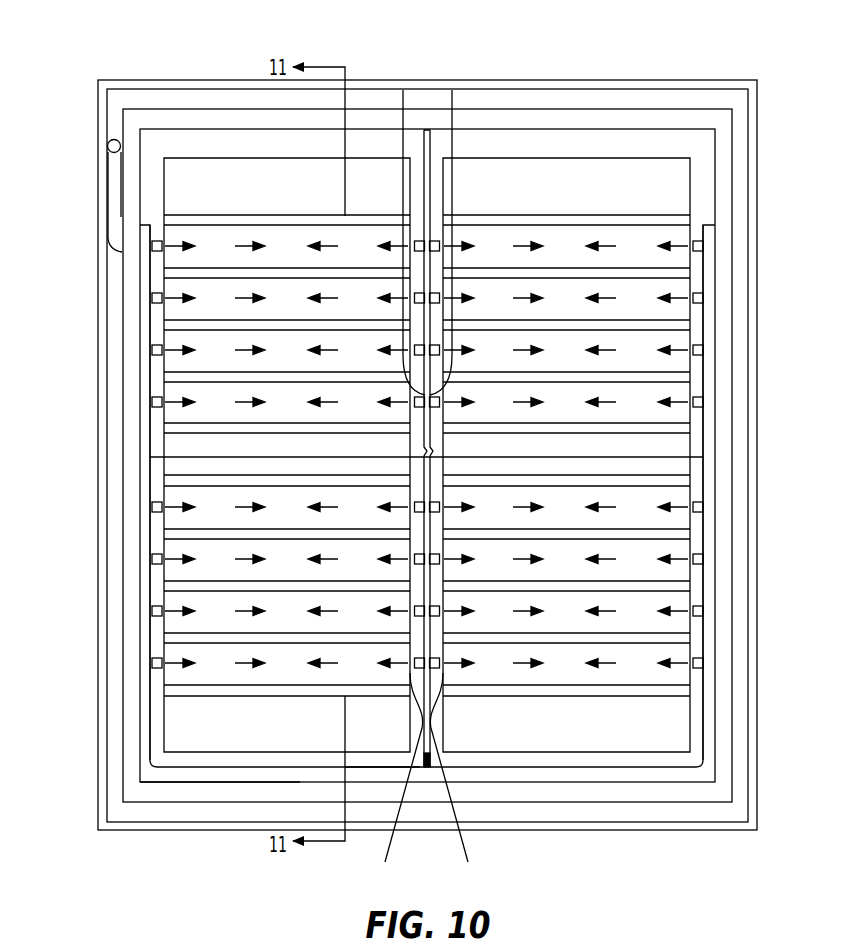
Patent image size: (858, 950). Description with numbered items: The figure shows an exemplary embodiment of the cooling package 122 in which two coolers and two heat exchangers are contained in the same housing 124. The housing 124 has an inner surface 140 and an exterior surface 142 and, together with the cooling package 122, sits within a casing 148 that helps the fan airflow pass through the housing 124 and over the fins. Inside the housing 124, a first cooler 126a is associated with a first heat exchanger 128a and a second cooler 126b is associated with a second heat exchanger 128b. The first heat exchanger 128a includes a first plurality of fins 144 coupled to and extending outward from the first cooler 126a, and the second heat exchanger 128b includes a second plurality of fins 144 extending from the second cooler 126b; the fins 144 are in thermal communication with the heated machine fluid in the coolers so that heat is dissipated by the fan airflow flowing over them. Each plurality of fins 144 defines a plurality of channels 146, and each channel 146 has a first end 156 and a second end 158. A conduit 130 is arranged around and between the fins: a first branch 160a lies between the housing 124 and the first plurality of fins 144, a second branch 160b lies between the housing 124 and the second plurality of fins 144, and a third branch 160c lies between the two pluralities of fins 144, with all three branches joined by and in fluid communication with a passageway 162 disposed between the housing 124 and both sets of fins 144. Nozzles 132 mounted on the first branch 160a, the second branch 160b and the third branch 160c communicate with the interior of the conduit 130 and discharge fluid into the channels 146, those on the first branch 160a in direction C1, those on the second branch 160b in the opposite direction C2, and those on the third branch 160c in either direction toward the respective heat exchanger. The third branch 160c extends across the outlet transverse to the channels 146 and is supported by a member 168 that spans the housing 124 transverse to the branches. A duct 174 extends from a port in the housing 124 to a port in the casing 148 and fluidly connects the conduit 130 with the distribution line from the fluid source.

The cooling package 122 is at (603, 102).
The housing 124 is at (135, 302).
The first cooler 126a is at (207, 185).
The second cooler 126b is at (621, 185).
The first heat exchanger 128a is at (380, 216).
The second heat exchanger 128b is at (701, 222).
The conduit 130 is at (180, 772).
The nozzles 132 is at (403, 90).
The inner surface 140 is at (155, 742).
The exterior surface 142 is at (600, 802).
The fins 144 is at (200, 378).
The channels 146 is at (208, 673).
The casing 148 is at (758, 812).
The first end 156 is at (165, 681).
The second end 158 is at (785, 718).
The first branch 160a is at (148, 637).
The second branch 160b is at (710, 663).
The third branch 160c is at (427, 767).
The passageway 162 is at (362, 773).
The member 168 is at (635, 457).
The duct 174 is at (118, 197).